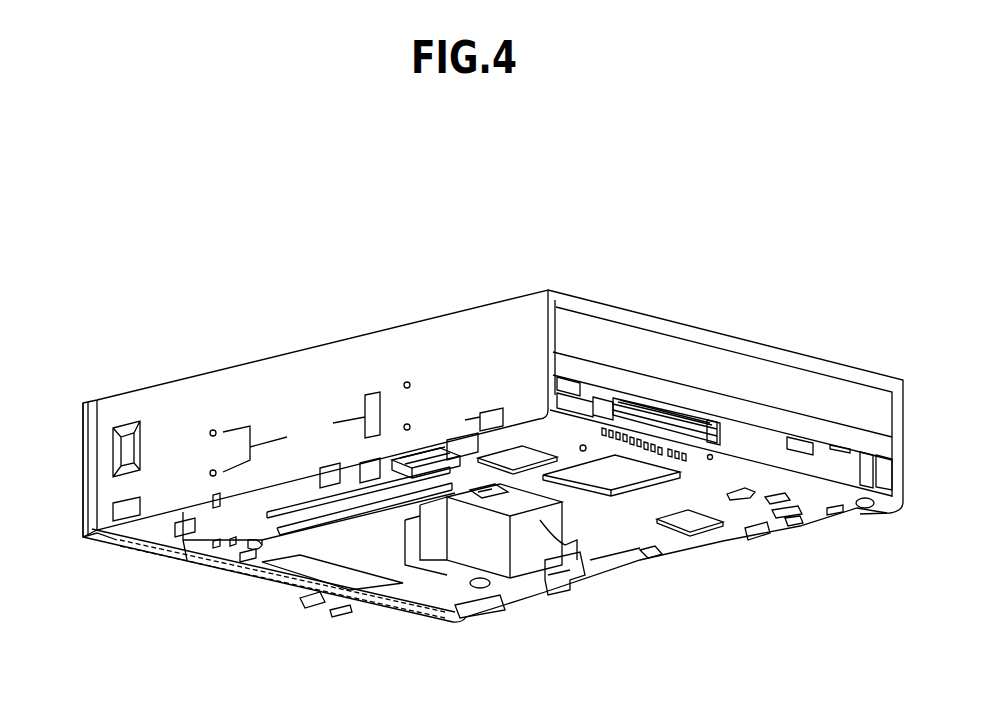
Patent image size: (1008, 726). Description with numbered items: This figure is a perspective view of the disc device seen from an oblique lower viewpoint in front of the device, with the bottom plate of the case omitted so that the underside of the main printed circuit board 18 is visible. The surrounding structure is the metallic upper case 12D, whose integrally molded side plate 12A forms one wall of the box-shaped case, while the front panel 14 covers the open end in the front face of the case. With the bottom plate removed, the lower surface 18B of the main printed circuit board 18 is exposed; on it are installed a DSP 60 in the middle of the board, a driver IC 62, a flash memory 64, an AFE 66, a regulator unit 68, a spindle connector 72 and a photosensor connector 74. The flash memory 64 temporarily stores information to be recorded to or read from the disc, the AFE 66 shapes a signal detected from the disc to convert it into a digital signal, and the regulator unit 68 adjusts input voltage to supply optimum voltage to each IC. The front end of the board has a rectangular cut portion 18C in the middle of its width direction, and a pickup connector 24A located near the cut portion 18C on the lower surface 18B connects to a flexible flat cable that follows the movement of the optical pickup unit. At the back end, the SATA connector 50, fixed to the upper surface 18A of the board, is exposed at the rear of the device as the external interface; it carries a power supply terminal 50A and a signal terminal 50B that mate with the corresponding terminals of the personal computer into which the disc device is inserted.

The upper case 12D is at (343, 336).
The side plate 12A is at (468, 337).
The front panel 14 is at (98, 512).
The main printed circuit board 18 is at (733, 543).
The upper surface 18A is at (650, 535).
The lower surface 18B is at (663, 545).
The cut portion 18C is at (547, 570).
The pickup connector 24A is at (534, 492).
The SATA connector 50 is at (673, 405).
The power supply terminal 50A is at (648, 410).
The signal terminal 50B is at (697, 417).
The DSP 60 is at (618, 483).
The driver IC 62 is at (393, 457).
The flash memory 64 is at (513, 462).
The AFE 66 is at (690, 523).
The regulator unit 68 is at (770, 488).
The spindle connector 72 is at (378, 482).
The photosensor connector 74 is at (336, 478).